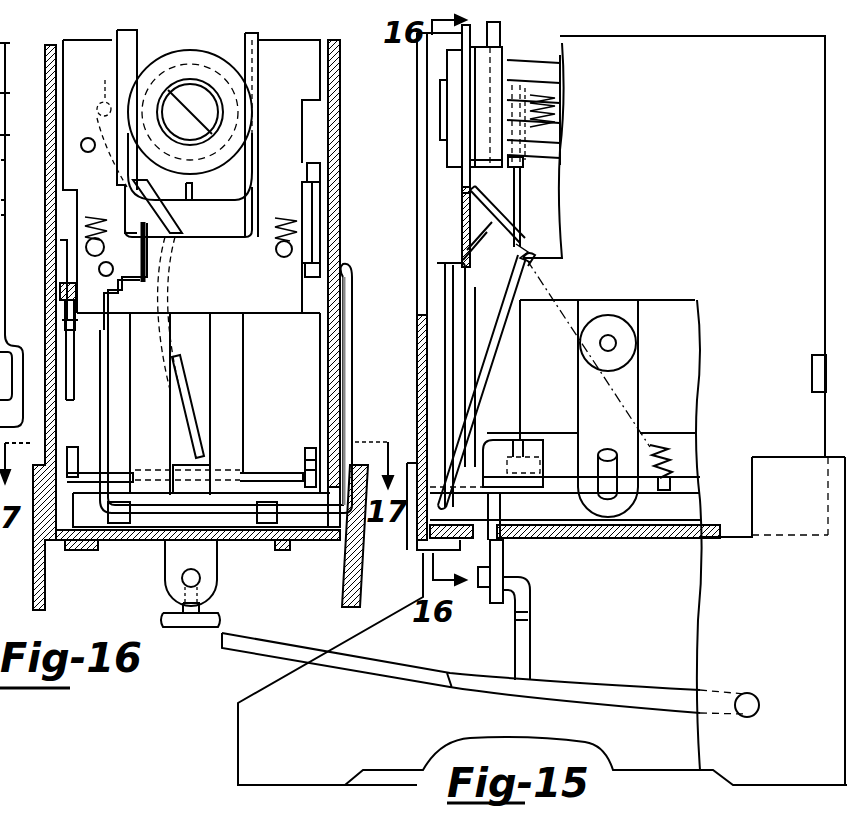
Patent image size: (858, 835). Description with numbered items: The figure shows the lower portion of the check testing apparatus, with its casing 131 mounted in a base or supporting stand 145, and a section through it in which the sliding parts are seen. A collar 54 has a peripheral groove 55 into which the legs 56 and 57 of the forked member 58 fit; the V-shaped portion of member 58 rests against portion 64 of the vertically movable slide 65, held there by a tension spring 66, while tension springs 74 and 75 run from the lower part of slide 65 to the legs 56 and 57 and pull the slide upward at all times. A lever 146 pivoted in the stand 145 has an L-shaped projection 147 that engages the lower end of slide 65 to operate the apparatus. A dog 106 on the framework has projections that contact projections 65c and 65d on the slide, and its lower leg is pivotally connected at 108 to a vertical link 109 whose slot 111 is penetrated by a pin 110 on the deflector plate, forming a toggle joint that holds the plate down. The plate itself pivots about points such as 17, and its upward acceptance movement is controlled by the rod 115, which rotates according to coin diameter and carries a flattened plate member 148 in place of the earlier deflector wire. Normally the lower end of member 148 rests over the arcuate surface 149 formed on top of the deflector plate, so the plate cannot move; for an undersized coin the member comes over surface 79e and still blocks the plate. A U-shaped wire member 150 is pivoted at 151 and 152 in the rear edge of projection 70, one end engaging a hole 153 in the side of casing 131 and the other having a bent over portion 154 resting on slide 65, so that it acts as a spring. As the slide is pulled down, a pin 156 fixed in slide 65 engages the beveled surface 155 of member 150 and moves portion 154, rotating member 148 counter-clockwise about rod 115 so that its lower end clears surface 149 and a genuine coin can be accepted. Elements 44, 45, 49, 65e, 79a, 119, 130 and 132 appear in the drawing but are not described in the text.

In FIG. 15, the pivot point 17 is at (560, 100).
In FIG. 16, the bobbin 44 is at (190, 112).
In FIG. 15, the bobbin 44 is at (445, 118).
In FIG. 16, the base plate 45 is at (33, 572).
In FIG. 15, the spring stack 49 is at (545, 62).
In FIG. 16, the collar 54 is at (213, 58).
In FIG. 15, the collar 54 is at (468, 70).
In FIG. 15, the peripheral groove 55 is at (455, 95).
In FIG. 16, the leg 56 is at (262, 40).
In FIG. 16, the leg 57 is at (117, 36).
In FIG. 15, the leg 57 is at (460, 48).
In FIG. 15, the forked member 58 is at (452, 176).
In FIG. 16, the portion of slide 64 is at (186, 295).
In FIG. 16, the vertically movable slide 65 is at (210, 568).
In FIG. 15, the vertically movable slide 65 is at (505, 555).
In FIG. 16, the projection on sliding plate 65c is at (322, 172).
In FIG. 16, the projection on sliding plate 65d is at (325, 255).
In FIG. 16, the hook 65e is at (47, 287).
In FIG. 15, the tension spring 66 is at (523, 248).
In FIG. 16, the projection 70 is at (320, 541).
In FIG. 15, the projection 70 is at (683, 511).
In FIG. 16, the tension spring 74 is at (290, 218).
In FIG. 16, the tension spring 75 is at (87, 217).
In FIG. 16, the bar end 79a is at (283, 473).
In FIG. 16, the surface 79e is at (80, 465).
In FIG. 16, the dog 106 is at (314, 204).
In FIG. 15, the dog 106 is at (612, 306).
In FIG. 15, the pivot 108 is at (616, 345).
In FIG. 16, the link 109 is at (0, 202).
In FIG. 15, the link 109 is at (640, 388).
In FIG. 16, the pin 110 is at (0, 215).
In FIG. 15, the pin 110 is at (608, 450).
In FIG. 15, the slot 111 is at (600, 480).
In FIG. 16, the rod 115 is at (94, 80).
In FIG. 15, the rod 115 is at (557, 86).
In FIG. 16, the roller 119 is at (88, 138).
In FIG. 16, the rod 130 is at (62, 327).
In FIG. 16, the casing 131 is at (341, 102).
In FIG. 15, the casing 131 is at (674, 246).
In FIG. 15, the bottom plate 132 is at (612, 540).
In FIG. 15, the supporting stand 145 is at (770, 542).
In FIG. 15, the lever 146 is at (652, 693).
In FIG. 16, the L-shaped projection 147 is at (172, 612).
In FIG. 15, the L-shaped projection 147 is at (522, 642).
In FIG. 16, the flattened plate member 148 is at (178, 230).
In FIG. 15, the flattened plate member 148 is at (521, 205).
In FIG. 16, the arcuate surface 149 is at (205, 456).
In FIG. 15, the arcuate surface 149 is at (522, 447).
In FIG. 16, the U-shaped wire member 150 is at (345, 414).
In FIG. 15, the U-shaped wire member 150 is at (488, 420).
In FIG. 16, the pivot 151 is at (117, 540).
In FIG. 16, the pivot 152 is at (266, 540).
In FIG. 16, the hole 153 is at (346, 277).
In FIG. 15, the hole 153 is at (530, 262).
In FIG. 16, the bent over portion 154 is at (150, 250).
In FIG. 15, the bent over portion 154 is at (460, 245).
In FIG. 16, the beveled surface 155 is at (104, 310).
In FIG. 16, the pin 156 is at (107, 262).
In FIG. 15, the pin 156 is at (462, 272).